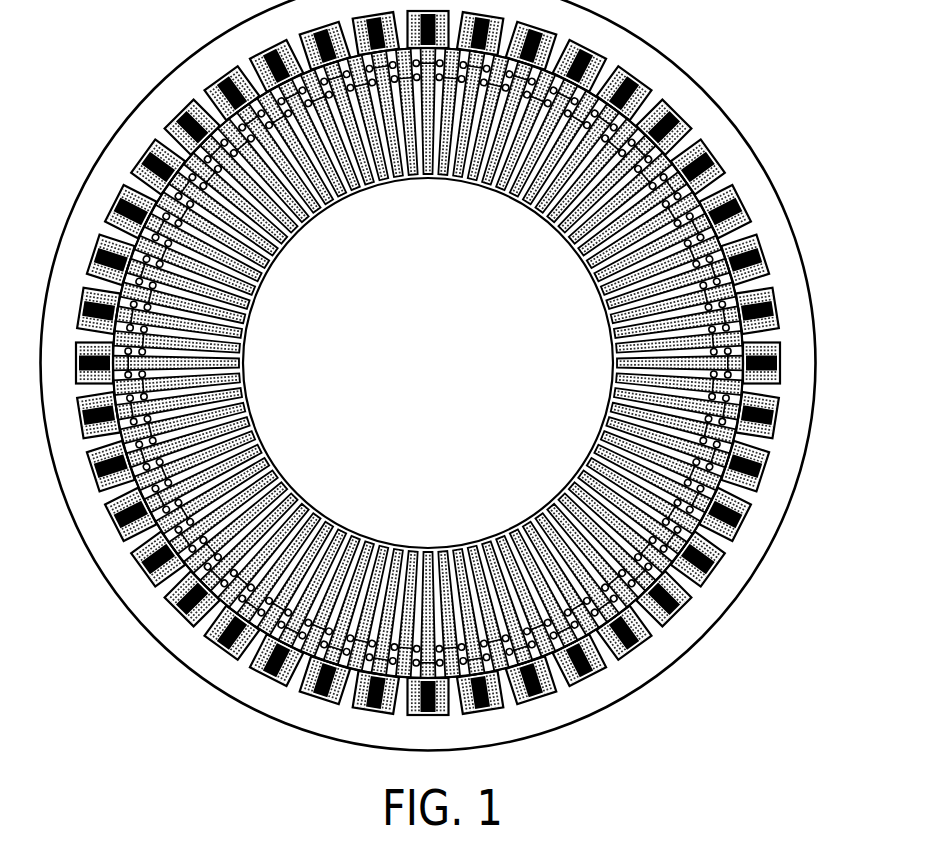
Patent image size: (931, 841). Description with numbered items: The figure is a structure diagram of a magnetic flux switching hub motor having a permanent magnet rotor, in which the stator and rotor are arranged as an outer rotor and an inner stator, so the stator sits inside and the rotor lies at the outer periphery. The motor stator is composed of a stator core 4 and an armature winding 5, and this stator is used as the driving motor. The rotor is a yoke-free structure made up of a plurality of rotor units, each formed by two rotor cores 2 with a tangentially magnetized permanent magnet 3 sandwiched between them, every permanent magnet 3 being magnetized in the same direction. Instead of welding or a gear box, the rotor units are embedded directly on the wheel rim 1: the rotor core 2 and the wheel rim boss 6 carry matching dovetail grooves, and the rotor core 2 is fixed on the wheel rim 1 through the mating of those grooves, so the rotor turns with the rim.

The wheel rim 1 is at (773, 245).
The rotor core 2 is at (715, 168).
The permanent magnet 3 is at (763, 477).
The stator core 4 is at (607, 215).
The armature winding 5 is at (615, 367).
The wheel rim boss 6 is at (248, 77).